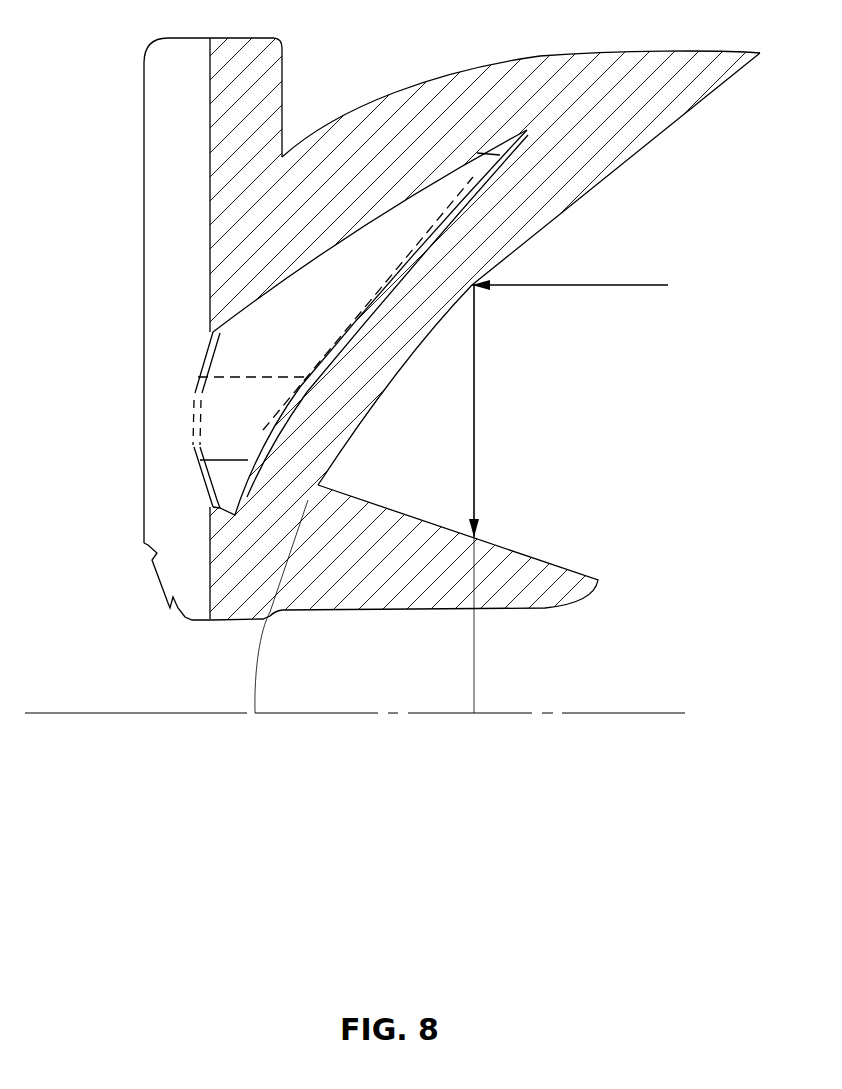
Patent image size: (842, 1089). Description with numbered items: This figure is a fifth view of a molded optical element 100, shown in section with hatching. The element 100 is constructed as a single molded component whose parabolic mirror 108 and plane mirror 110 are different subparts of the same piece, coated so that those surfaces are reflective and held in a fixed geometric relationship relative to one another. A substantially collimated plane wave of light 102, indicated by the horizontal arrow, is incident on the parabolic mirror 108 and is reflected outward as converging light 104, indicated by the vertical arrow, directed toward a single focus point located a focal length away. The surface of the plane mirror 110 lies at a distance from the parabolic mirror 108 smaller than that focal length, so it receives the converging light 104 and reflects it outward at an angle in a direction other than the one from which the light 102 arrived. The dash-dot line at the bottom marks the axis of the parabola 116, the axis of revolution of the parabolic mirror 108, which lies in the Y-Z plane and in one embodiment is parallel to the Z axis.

The molded optical element 100 is at (412, 884).
The collimated plane wave of light 102 is at (640, 285).
The converging light 104 is at (475, 437).
The parabolic mirror 108 is at (657, 145).
The plane mirror 110 is at (548, 561).
The axis of the parabola 116 is at (597, 713).